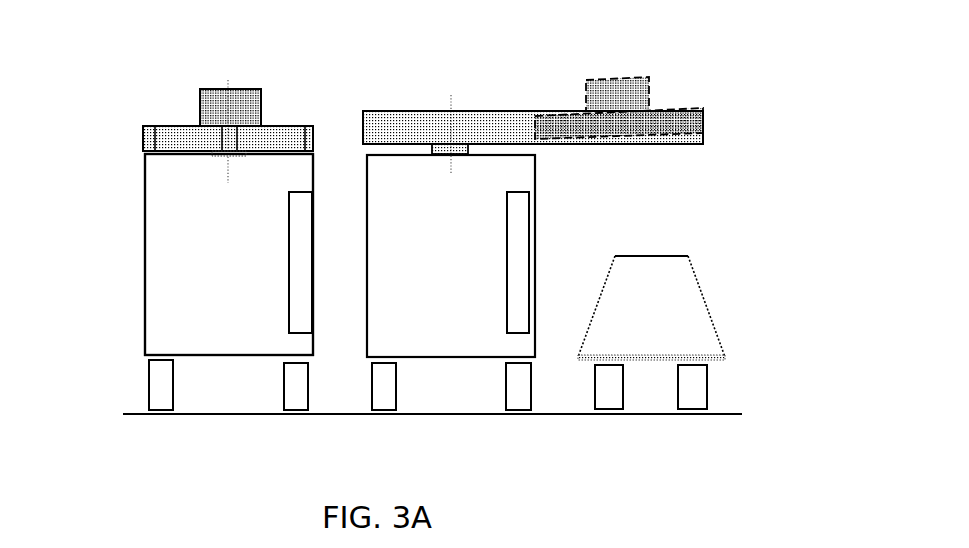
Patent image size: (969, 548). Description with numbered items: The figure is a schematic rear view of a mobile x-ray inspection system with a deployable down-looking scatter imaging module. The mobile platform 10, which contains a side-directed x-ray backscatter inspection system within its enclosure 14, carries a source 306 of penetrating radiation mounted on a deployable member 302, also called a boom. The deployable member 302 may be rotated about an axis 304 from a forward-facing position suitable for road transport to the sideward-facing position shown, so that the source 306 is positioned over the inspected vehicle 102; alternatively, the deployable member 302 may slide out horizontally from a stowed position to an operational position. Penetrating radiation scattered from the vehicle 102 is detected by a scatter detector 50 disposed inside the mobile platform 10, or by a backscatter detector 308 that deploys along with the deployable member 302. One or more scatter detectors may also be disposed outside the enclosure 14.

The mobile platform 10 is at (213, 240).
The enclosure 14 is at (174, 254).
The scatter detector 50 is at (499, 252).
The vehicle 102 is at (689, 296).
The deployable member 302 is at (259, 80).
The axis 304 is at (191, 77).
The source 306 is at (661, 61).
The backscatter detector 308 is at (662, 91).